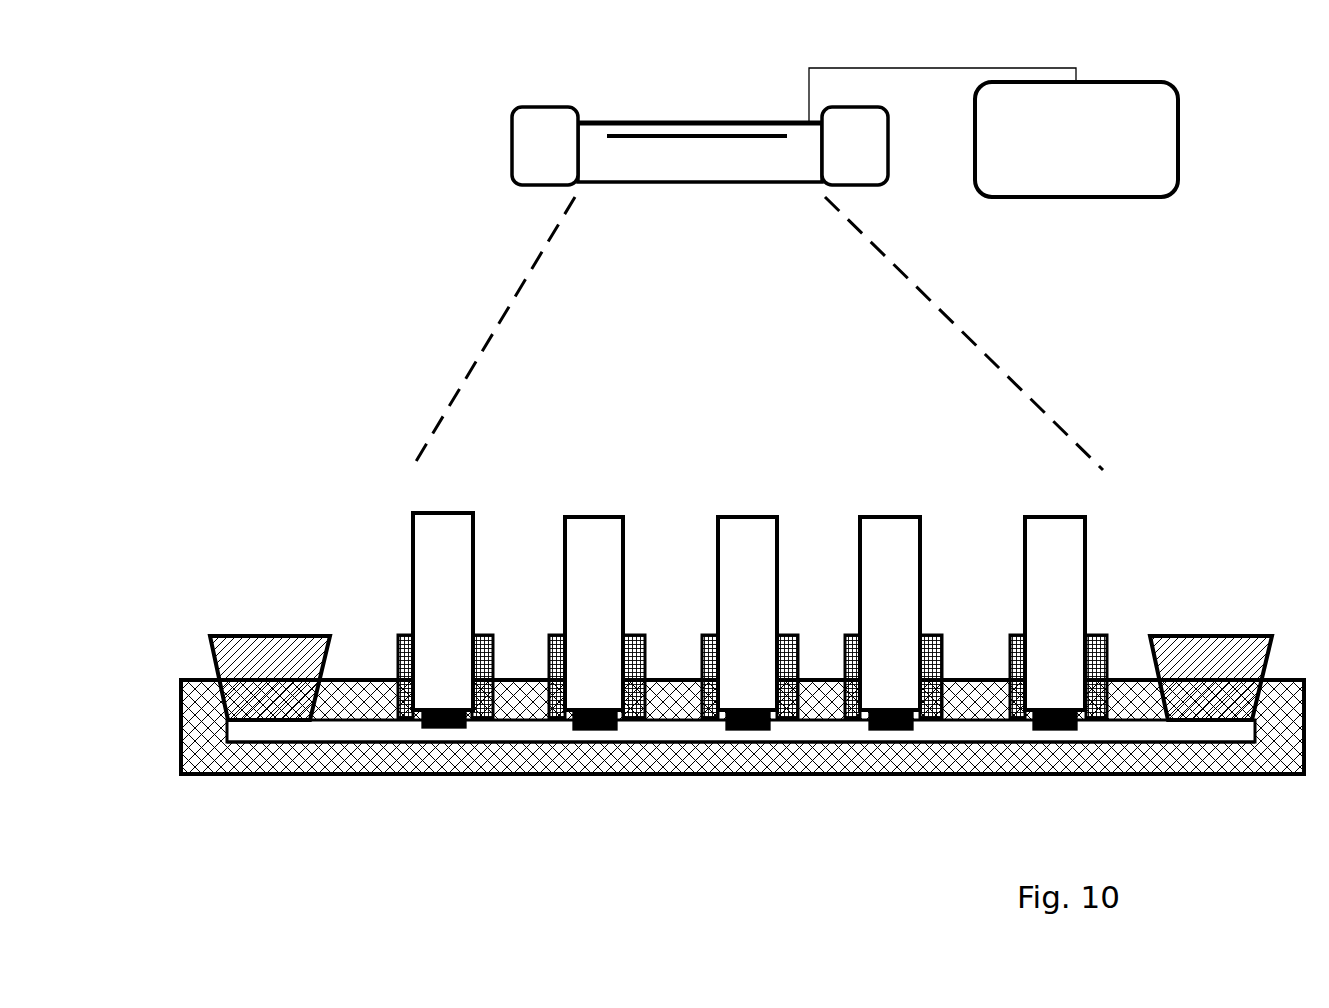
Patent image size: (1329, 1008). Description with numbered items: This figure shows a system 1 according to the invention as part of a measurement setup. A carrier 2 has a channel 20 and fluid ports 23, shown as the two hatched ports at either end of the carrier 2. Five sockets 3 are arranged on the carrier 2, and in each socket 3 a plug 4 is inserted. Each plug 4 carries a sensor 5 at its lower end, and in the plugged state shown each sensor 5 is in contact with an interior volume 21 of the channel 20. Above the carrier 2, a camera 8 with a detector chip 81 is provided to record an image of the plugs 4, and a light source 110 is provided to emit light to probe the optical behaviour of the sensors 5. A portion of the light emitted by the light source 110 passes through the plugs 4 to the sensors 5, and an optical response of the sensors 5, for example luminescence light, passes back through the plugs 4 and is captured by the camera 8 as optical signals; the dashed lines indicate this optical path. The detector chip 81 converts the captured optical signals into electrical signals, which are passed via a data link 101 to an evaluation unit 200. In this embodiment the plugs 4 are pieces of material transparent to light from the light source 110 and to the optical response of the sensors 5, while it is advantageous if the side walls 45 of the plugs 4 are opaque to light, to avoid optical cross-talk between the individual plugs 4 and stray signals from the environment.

The system 1 is at (219, 479).
The carrier 2 is at (195, 679).
The socket 3 is at (398, 636).
The plug 4 is at (1087, 553).
The side wall 45 is at (716, 547).
The sensor 5 is at (586, 730).
The channel 20 is at (313, 743).
The interior volume 21 is at (348, 732).
The fluid port 23 is at (262, 636).
The camera 8 is at (598, 122).
The detector chip 81 is at (729, 133).
The light source 110 is at (511, 157).
The data link 101 is at (904, 67).
The evaluation unit 200 is at (1093, 153).